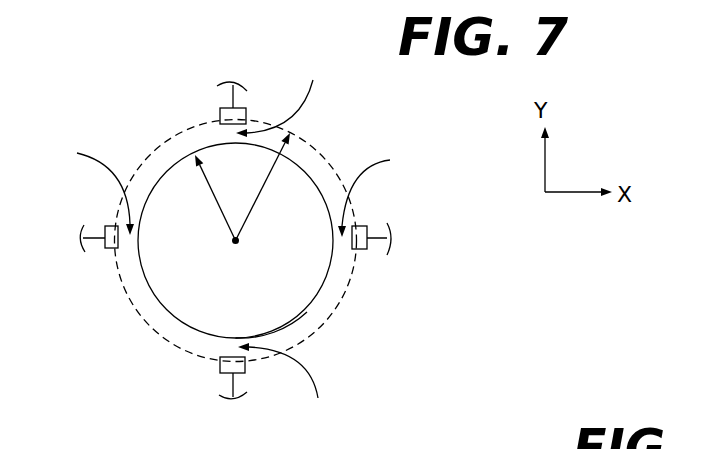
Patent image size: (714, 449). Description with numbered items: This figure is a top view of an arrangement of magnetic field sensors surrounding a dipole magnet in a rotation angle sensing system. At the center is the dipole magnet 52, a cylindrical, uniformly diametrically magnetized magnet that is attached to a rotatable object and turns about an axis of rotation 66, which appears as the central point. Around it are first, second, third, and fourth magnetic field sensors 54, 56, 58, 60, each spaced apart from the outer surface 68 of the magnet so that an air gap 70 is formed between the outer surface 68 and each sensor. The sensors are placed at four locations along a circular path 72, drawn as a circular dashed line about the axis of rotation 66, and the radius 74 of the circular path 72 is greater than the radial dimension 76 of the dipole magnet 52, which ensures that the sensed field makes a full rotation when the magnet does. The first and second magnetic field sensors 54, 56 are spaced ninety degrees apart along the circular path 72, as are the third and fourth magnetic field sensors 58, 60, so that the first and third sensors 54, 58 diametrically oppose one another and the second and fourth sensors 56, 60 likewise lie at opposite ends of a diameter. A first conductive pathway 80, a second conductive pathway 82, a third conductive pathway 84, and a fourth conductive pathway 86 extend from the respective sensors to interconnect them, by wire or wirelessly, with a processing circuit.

The dipole magnet 52 is at (315, 207).
The first magnetic field sensor 54 is at (362, 225).
The second magnetic field sensor 56 is at (222, 367).
The third magnetic field sensor 58 is at (105, 230).
The fourth magnetic field sensor 60 is at (220, 113).
The axis of rotation 66 is at (238, 242).
The outer surface 68 is at (307, 312).
The air gap 70 is at (233, 239).
The circular path 72 is at (125, 298).
The radius of circular path 74 is at (322, 150).
The radial dimension 76 is at (208, 188).
The first conductive pathway 80 is at (373, 240).
The second conductive pathway 82 is at (237, 380).
The third conductive pathway 84 is at (95, 252).
The fourth conductive pathway 86 is at (238, 98).